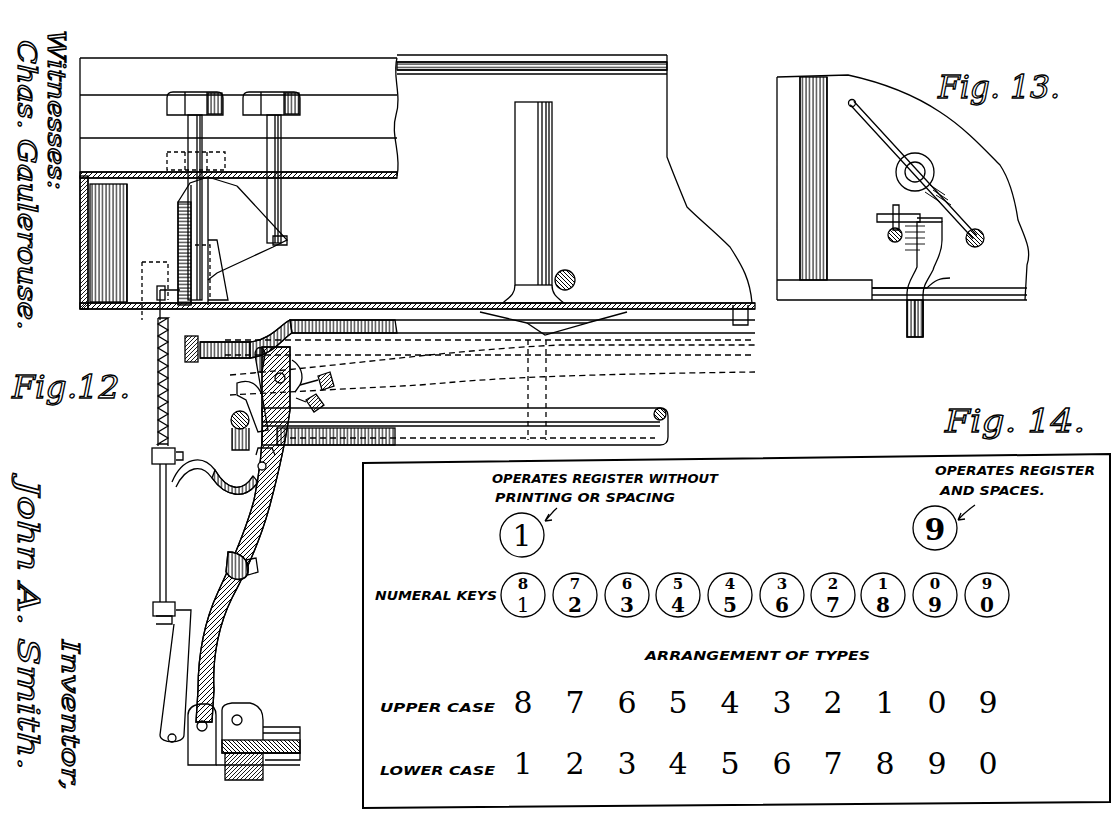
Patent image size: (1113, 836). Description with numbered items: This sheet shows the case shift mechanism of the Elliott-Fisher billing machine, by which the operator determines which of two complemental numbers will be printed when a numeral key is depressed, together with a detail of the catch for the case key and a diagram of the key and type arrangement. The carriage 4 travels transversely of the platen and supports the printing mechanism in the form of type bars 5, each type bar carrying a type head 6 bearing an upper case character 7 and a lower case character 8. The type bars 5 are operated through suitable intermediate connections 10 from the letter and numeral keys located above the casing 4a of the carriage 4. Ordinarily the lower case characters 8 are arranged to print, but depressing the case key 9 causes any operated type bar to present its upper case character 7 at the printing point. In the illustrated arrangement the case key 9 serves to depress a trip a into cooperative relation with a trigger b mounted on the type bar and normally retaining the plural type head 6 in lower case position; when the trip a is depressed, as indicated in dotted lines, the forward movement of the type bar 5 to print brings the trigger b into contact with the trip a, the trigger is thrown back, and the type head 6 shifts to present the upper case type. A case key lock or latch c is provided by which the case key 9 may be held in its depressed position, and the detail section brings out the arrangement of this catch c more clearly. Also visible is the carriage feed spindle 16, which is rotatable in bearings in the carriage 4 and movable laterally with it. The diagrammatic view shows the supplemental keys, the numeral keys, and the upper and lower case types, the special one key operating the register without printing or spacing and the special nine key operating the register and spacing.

In FIG. 12, the carriage 4 is at (92, 314).
In FIG. 12, the casing of the carriage 4a is at (397, 124).
In FIG. 13, the casing of the carriage 4a is at (838, 298).
In FIG. 12, the case key 9 is at (168, 106).
In FIG. 12, the case key lock or latch c is at (228, 222).
In FIG. 13, the case key lock or latch c is at (912, 338).
In FIG. 12, the carriage feed spindle 16 is at (572, 276).
In FIG. 12, the type head 6 is at (300, 386).
In FIG. 12, the upper case character 7 is at (324, 405).
In FIG. 12, the lower case character 8 is at (334, 384).
In FIG. 12, the trip a is at (362, 444).
In FIG. 12, the trigger b is at (215, 469).
In FIG. 12, the type bar 5 is at (262, 480).
In FIG. 12, the intermediate connections 10 is at (170, 652).